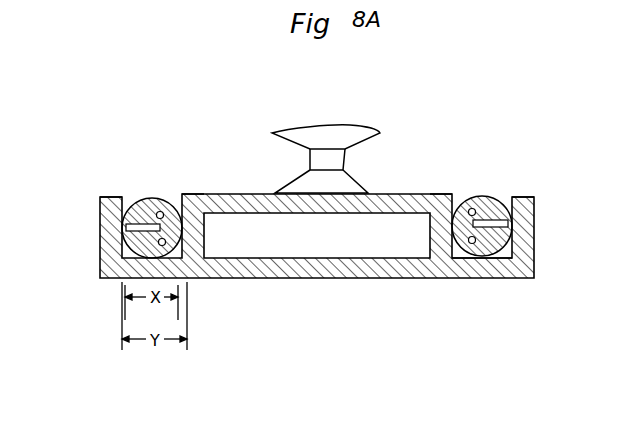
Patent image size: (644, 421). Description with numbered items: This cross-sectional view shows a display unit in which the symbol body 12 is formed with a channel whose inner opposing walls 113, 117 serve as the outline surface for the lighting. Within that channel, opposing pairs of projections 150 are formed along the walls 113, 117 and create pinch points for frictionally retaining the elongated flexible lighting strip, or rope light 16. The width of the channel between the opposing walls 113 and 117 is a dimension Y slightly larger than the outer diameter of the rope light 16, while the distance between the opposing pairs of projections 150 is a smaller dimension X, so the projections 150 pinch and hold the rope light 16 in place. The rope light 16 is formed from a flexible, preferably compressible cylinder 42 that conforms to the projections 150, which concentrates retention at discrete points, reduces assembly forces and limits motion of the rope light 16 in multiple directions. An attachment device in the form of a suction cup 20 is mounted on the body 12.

The symbol body 12 is at (225, 194).
The elongated flexible lighting strip (rope light) 16 is at (140, 198).
The suction cup 20 is at (357, 136).
The flexible cylinder 42 is at (488, 198).
The opposing wall of channel 113 is at (175, 198).
The opposing wall of channel 117 is at (122, 196).
The projection 150 is at (510, 243).